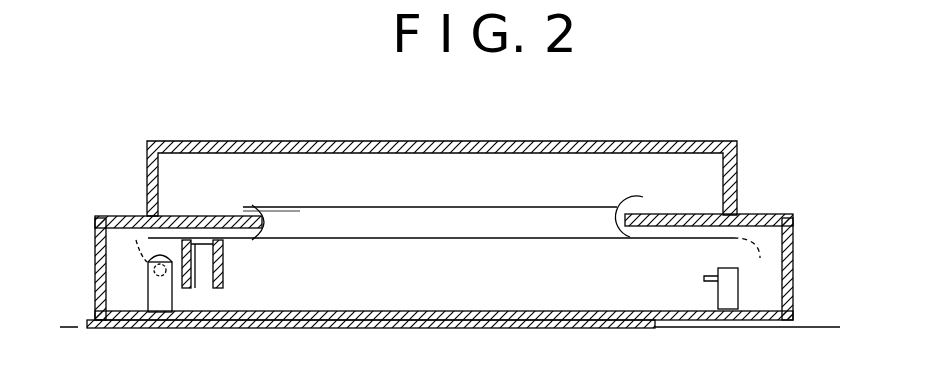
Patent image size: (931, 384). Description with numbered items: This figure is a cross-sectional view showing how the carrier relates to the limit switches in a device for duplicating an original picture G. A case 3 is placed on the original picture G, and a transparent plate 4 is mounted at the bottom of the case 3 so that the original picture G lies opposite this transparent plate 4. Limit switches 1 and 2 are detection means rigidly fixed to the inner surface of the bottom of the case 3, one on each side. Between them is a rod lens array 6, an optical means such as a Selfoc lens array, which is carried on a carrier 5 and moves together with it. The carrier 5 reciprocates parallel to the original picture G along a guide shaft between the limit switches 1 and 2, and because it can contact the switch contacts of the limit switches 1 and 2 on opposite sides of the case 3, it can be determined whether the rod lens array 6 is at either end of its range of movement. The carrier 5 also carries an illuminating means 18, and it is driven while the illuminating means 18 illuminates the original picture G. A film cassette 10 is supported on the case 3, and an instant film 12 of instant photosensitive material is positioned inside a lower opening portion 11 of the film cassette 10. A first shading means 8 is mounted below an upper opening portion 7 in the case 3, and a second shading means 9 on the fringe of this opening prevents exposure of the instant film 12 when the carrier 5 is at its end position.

The limit switch 1 is at (152, 283).
The limit switch 2 is at (740, 285).
The case 3 is at (93, 243).
The transparent plate 4 is at (513, 320).
The carrier 5 is at (225, 270).
The rod lens array 6 is at (205, 277).
The upper opening portion 7 is at (337, 222).
The first shading means 8 is at (750, 216).
The second shading means 9 is at (270, 213).
The film cassette 10 is at (502, 141).
The lower opening portion 11 is at (457, 221).
The instant film 12 is at (553, 208).
The illuminating means 18 is at (150, 262).
The original picture G is at (390, 327).